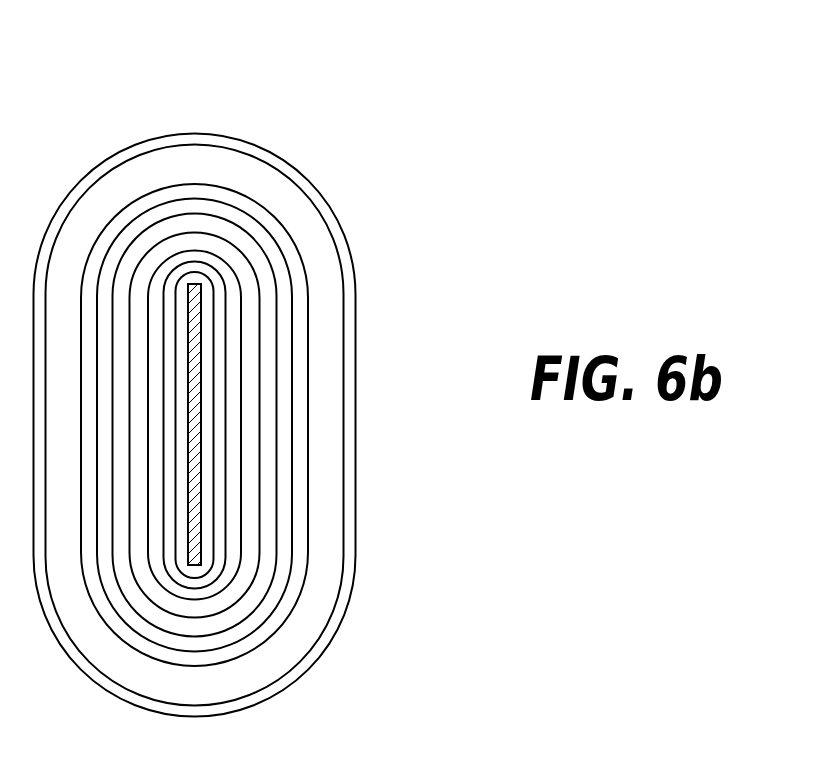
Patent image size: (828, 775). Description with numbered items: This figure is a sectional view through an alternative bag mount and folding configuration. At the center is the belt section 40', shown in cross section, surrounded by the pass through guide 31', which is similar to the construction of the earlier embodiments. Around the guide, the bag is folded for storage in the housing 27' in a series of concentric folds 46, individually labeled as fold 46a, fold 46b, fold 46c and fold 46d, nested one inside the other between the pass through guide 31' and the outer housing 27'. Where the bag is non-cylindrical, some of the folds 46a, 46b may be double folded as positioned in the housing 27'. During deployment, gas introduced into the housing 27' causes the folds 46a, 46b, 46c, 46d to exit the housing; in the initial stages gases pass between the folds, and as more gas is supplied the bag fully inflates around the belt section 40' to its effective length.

The housing 27' is at (249, 425).
The pass through guide 31' is at (287, 425).
The belt section 40' is at (307, 427).
The folds 46 is at (255, 376).
The fold 46a is at (197, 188).
The fold 46b is at (243, 218).
The fold 46c is at (257, 257).
The fold 46d is at (252, 300).